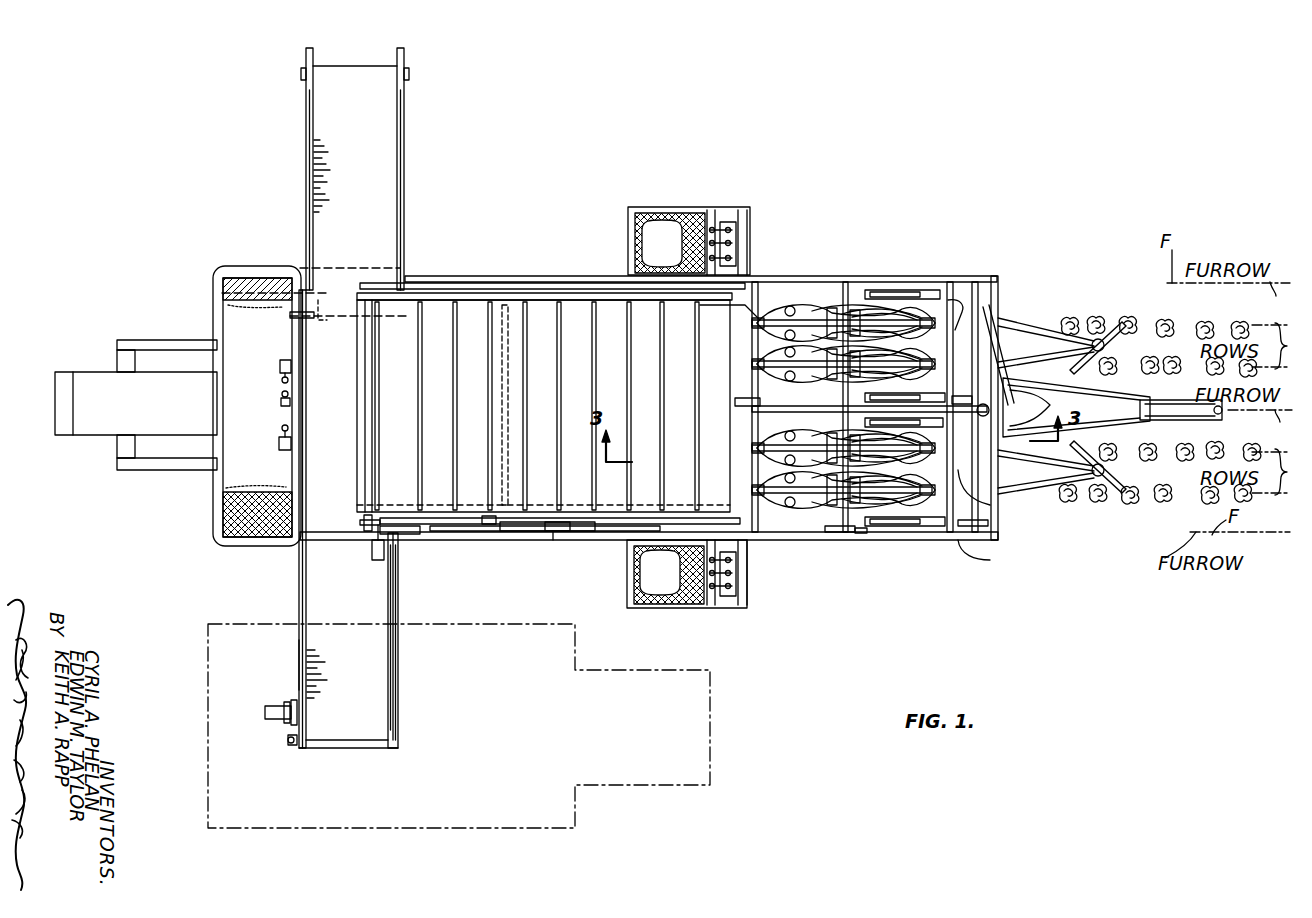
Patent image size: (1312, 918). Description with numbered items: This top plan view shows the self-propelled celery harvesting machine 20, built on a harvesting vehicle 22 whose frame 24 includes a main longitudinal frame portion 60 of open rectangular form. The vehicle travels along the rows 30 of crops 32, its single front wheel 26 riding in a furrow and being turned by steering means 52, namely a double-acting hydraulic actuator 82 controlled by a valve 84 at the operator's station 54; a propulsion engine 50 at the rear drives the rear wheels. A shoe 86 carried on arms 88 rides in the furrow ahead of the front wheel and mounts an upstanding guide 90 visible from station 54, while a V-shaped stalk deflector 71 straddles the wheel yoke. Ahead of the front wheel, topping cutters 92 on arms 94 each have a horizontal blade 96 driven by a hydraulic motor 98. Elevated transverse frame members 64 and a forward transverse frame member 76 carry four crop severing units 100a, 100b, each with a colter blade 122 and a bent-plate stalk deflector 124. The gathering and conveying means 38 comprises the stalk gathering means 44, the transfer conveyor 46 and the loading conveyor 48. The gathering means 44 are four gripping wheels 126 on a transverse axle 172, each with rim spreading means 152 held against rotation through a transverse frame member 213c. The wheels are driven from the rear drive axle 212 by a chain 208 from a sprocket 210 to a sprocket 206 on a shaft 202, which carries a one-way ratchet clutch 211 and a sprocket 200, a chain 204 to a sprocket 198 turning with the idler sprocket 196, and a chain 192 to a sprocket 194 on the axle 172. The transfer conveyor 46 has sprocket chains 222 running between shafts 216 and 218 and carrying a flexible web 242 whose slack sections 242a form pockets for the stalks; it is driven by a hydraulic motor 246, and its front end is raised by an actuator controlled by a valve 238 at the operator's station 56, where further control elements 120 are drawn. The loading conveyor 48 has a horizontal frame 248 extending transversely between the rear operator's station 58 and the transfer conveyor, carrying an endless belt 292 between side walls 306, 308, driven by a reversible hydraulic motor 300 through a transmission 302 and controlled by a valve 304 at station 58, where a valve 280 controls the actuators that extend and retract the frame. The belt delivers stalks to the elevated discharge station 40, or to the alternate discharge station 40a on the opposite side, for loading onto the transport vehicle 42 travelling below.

The celery harvesting machine 20 is at (920, 172).
The harvesting vehicle 22 is at (252, 266).
The frame 24 is at (153, 340).
The front wheel 26 is at (956, 412).
The rows 30 is at (1280, 325).
The crops 32 is at (1172, 360).
The gathering and conveying means 38 is at (808, 235).
The discharge station 40 is at (373, 749).
The alternate discharge station 40a is at (348, 66).
The transport vehicle 42 is at (712, 705).
The stalk gathering means 44 is at (914, 302).
The transfer conveyor 46 is at (546, 296).
The loading conveyor 48 is at (300, 592).
The propulsion engine 50 is at (100, 428).
The steering means 52 is at (1000, 318).
The operator's station 54 is at (656, 208).
The operator's station 56 is at (667, 606).
The operator's station 58 is at (237, 405).
The main longitudinal frame portion 60 is at (523, 275).
The transverse frame members 64 is at (983, 290).
The stalk deflector 71 is at (1057, 404).
The transverse frame member 76 is at (955, 530).
The hydraulic actuator 82 is at (1012, 324).
The valve 84 is at (735, 222).
The shoe 86 is at (1174, 410).
The arms 88 is at (1118, 426).
The upstanding guide 90 is at (1212, 414).
The topping cutters 92 is at (1098, 338).
The arms 94 is at (1040, 330).
The blade 96 is at (1122, 322).
The hydraulic motor 98 is at (1106, 345).
The crop severing unit 100a is at (862, 397).
The crop severing unit 100b is at (878, 290).
The control valves 120 is at (733, 256).
The colter blade 122 is at (946, 310).
The stalk deflector 124 is at (992, 502).
The gripping wheels 126 is at (810, 305).
The rim spreading means 152 is at (795, 318).
The axle 172 is at (832, 532).
The sprocket chain 192 is at (610, 542).
The sprocket 194 is at (860, 535).
The idler sprocket 196 is at (565, 522).
The sprocket 198 is at (578, 534).
The sprocket 200 is at (517, 534).
The shaft 202 is at (522, 412).
The sprocket chain 204 is at (552, 542).
The sprocket 206 is at (504, 300).
The sprocket chain 208 is at (428, 305).
The sprocket 210 is at (330, 302).
The one-way ratchet clutch 211 is at (488, 525).
The rear drive axle 212 is at (314, 302).
The transverse frame member 213c is at (760, 405).
The shaft 216 is at (705, 312).
The shaft 218 is at (362, 526).
The sprocket chains 222 is at (582, 298).
The valve 238 is at (737, 562).
The web 242 is at (433, 490).
The web section 242a is at (468, 322).
The hydraulic motor 246 is at (372, 552).
The conveyor frame 248 is at (400, 662).
The valve 280 is at (279, 452).
The conveyor belt 292 is at (341, 628).
The reversible hydraulic motor 300 is at (273, 722).
The transmission 302 is at (291, 745).
The valve 304 is at (280, 364).
The side wall 306 is at (300, 657).
The side wall 308 is at (400, 641).